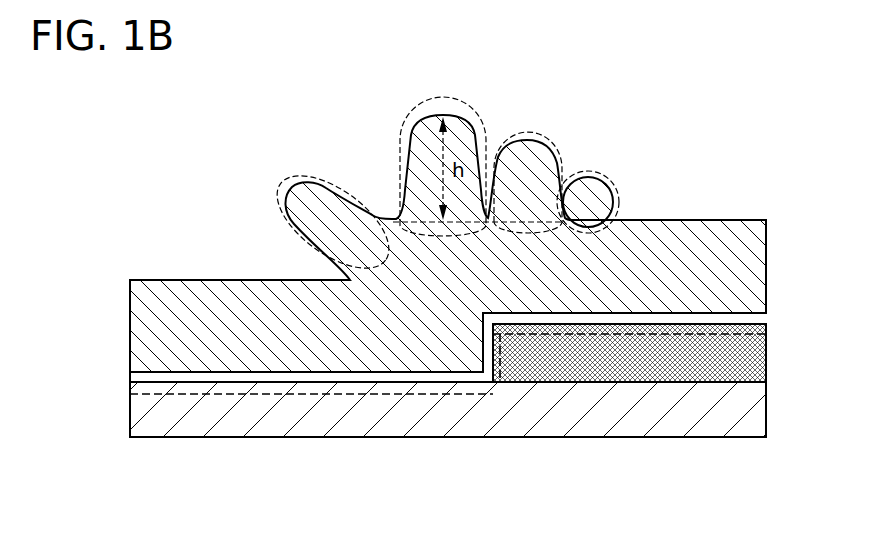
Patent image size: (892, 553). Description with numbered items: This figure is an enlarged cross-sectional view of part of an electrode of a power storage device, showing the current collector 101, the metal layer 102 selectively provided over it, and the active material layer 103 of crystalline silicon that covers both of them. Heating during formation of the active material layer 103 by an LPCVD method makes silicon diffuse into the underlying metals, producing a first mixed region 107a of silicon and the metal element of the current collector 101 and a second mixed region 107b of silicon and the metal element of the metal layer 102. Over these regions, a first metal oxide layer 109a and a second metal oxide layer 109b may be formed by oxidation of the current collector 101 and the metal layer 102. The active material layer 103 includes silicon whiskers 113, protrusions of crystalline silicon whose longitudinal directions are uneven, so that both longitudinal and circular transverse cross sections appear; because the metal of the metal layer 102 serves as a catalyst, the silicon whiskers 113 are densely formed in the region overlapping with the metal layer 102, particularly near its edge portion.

The current collector 101 is at (657, 430).
The metal layer 102 is at (737, 357).
The active material layer 103 is at (667, 247).
The first mixed region 107a is at (128, 383).
The second mixed region 107b is at (770, 321).
The first metal oxide layer 109a is at (330, 377).
The second metal oxide layer 109b is at (520, 315).
The silicon whisker 113 is at (318, 178).